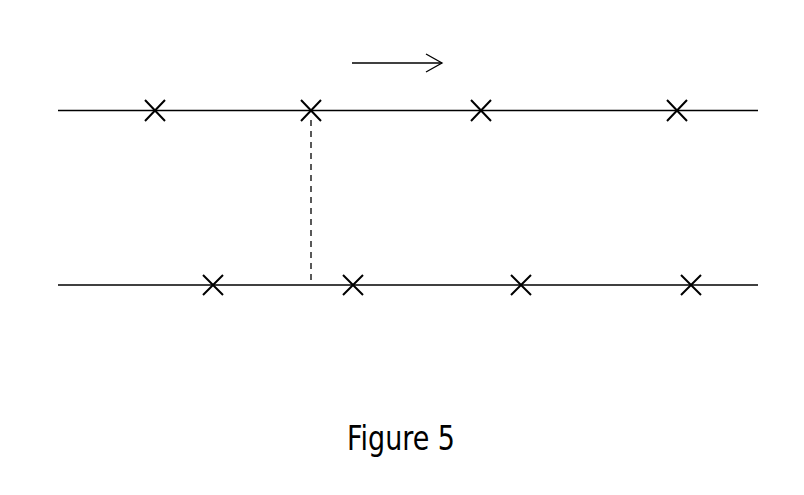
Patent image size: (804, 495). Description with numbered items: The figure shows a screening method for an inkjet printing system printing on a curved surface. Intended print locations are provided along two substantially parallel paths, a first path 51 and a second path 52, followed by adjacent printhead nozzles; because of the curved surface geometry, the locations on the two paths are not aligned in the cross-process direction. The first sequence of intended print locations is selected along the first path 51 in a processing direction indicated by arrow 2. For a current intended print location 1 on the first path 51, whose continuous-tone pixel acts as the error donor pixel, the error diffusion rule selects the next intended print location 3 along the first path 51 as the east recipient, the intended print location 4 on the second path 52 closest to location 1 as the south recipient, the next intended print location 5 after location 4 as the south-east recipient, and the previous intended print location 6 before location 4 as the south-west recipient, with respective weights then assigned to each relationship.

The current intended print location 1 is at (310, 96).
The processing direction arrow 2 is at (397, 52).
The next intended print location 3 is at (482, 96).
The intended print location on second path 4 is at (353, 297).
The next intended print location on second path 5 is at (521, 297).
The previous intended print location on second path 6 is at (213, 297).
The first path 51 is at (388, 110).
The second path 52 is at (388, 285).